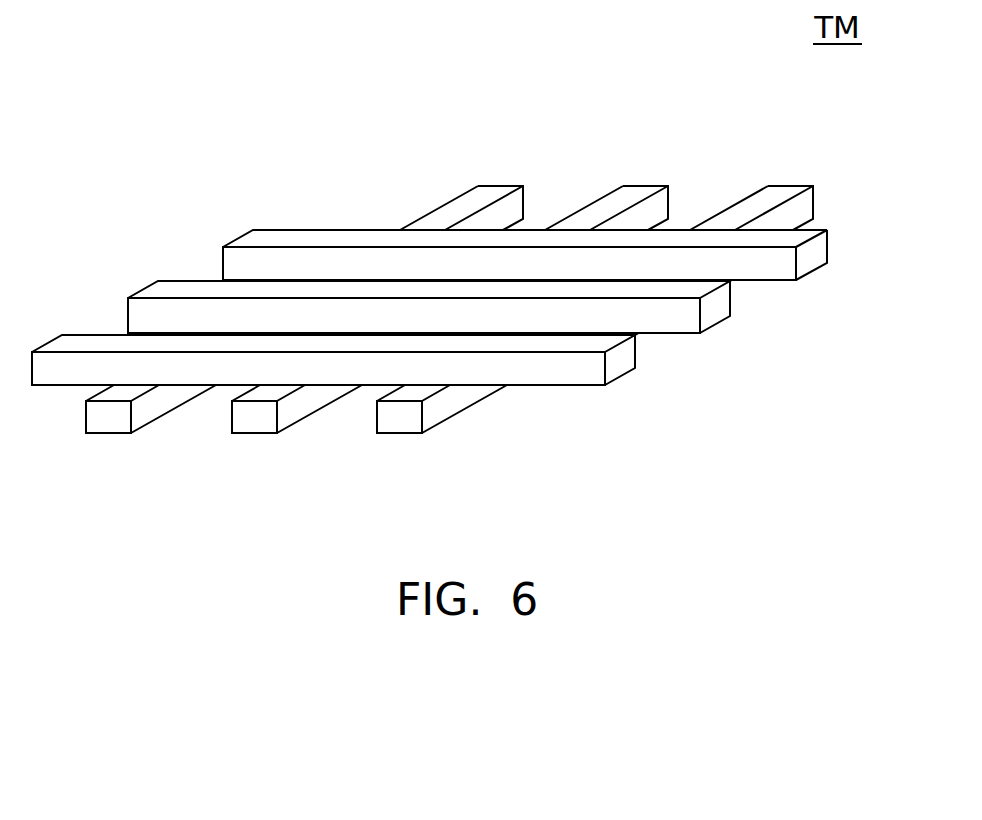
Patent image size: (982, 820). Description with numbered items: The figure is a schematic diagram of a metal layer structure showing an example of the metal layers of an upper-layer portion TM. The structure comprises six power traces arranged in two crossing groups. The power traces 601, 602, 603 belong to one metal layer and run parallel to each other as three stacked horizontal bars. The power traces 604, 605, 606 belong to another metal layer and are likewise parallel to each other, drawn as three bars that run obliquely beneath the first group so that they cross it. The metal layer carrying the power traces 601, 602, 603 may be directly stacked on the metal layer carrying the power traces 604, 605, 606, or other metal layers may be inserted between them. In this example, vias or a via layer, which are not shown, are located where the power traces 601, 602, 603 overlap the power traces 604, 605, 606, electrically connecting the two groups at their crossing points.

The power trace 601 is at (813, 258).
The power trace 602 is at (718, 308).
The power trace 603 is at (620, 362).
The power trace 604 is at (492, 195).
The power trace 605 is at (637, 195).
The power trace 606 is at (783, 195).